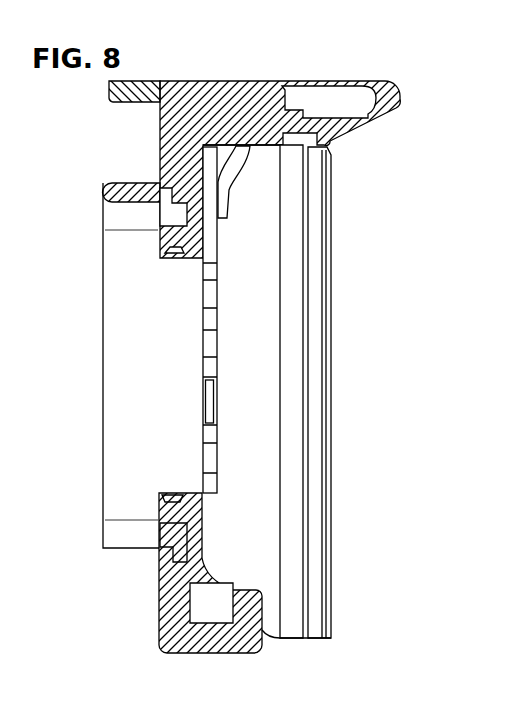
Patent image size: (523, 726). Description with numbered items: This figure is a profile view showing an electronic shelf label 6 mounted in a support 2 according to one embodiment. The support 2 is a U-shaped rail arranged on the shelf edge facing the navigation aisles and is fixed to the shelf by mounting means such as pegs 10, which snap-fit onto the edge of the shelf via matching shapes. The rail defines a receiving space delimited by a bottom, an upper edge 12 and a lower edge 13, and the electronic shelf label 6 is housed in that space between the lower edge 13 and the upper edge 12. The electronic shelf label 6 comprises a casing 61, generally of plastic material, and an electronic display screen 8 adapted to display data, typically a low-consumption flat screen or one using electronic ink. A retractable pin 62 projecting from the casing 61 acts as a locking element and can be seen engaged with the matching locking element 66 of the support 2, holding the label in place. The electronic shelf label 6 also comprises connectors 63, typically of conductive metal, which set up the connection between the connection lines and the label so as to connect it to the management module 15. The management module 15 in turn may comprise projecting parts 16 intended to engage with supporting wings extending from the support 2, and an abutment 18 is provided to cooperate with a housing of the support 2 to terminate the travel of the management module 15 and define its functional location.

The support 2 is at (302, 46).
The electronic shelf label 6 is at (368, 265).
The electronic display screen 8 is at (336, 378).
The pegs 10 is at (108, 137).
The upper edge 12 is at (302, 112).
The lower edge 13 is at (209, 640).
The management module 15 is at (78, 376).
The projecting parts 16 is at (172, 212).
The abutment 18 is at (120, 440).
The casing 61 is at (293, 620).
The retractable pin 62 is at (238, 158).
The connectors 63 is at (210, 268).
The matching locking element 66 is at (228, 118).